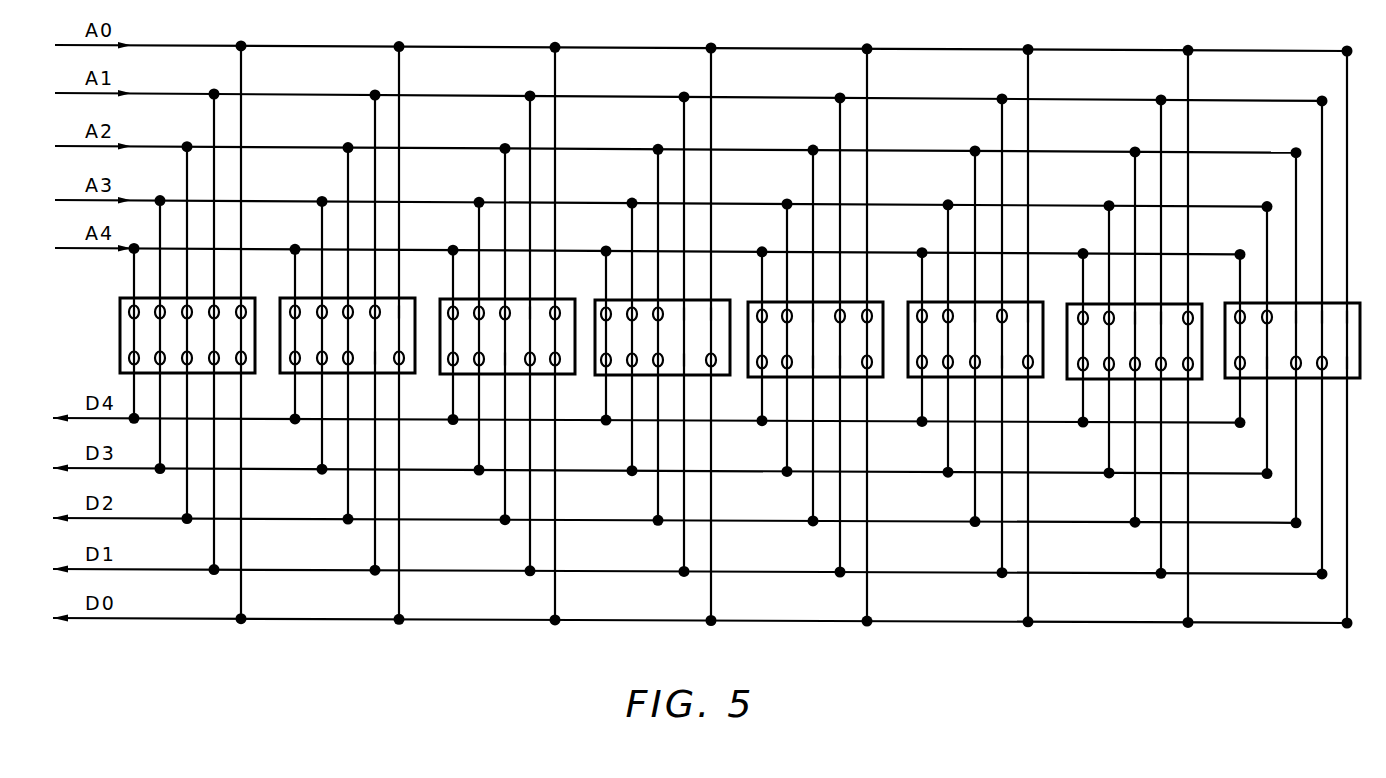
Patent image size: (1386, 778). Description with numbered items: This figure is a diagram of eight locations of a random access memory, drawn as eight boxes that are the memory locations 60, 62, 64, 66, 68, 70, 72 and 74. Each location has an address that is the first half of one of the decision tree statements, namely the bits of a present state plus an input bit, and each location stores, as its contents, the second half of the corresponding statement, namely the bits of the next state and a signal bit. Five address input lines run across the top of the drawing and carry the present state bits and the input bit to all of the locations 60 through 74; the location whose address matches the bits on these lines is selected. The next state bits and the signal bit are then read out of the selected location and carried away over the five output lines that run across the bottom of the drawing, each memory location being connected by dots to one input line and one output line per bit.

The memory cell / decoder block 60 is at (170, 345).
The memory cell / decoder block 62 is at (330, 345).
The memory cell / decoder block 64 is at (487, 346).
The memory cell / decoder block 66 is at (640, 347).
The memory cell / decoder block 68 is at (796, 349).
The memory cell / decoder block 70 is at (957, 349).
The memory cell / decoder block 72 is at (1116, 351).
The memory cell / decoder block 74 is at (1266, 350).